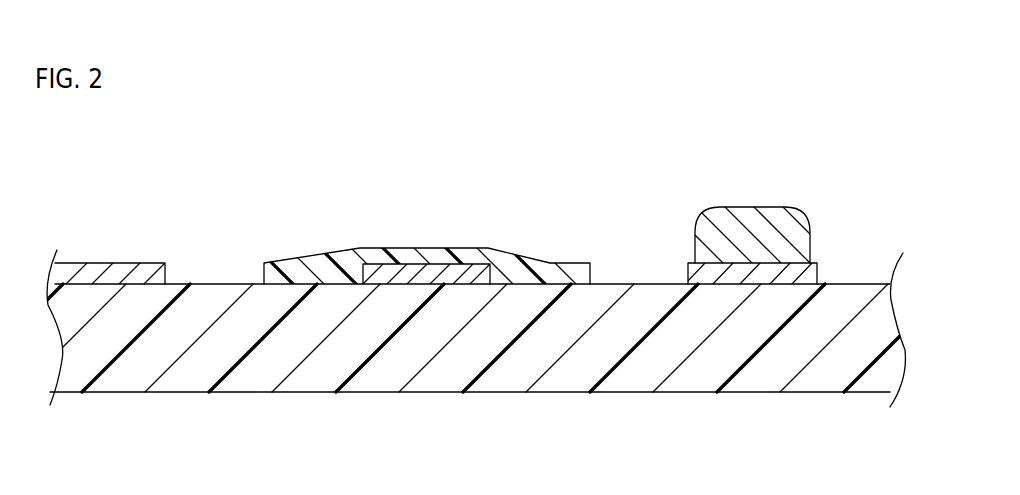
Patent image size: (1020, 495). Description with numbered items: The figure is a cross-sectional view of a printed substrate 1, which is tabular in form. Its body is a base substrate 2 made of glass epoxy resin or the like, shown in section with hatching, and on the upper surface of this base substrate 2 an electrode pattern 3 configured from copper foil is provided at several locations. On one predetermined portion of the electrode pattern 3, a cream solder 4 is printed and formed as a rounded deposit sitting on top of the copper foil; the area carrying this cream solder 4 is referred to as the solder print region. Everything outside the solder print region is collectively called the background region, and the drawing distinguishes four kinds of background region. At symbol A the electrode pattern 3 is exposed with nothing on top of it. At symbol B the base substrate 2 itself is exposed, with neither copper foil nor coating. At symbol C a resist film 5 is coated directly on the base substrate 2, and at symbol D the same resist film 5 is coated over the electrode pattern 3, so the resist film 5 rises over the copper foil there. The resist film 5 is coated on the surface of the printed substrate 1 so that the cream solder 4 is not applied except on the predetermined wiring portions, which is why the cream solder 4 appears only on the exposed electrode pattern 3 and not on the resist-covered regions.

The printed substrate 1 is at (664, 434).
The base substrate 2 is at (275, 392).
The electrode pattern 3 is at (146, 263).
The cream solder 4 is at (770, 207).
The resist film 5 is at (573, 263).
The region where the electrode pattern is exposed A is at (108, 262).
The region where the base substrate is exposed B is at (212, 284).
The region where the resist film is coated on the base substrate C is at (285, 263).
The region where the resist film is coated on the electrode pattern D is at (437, 247).